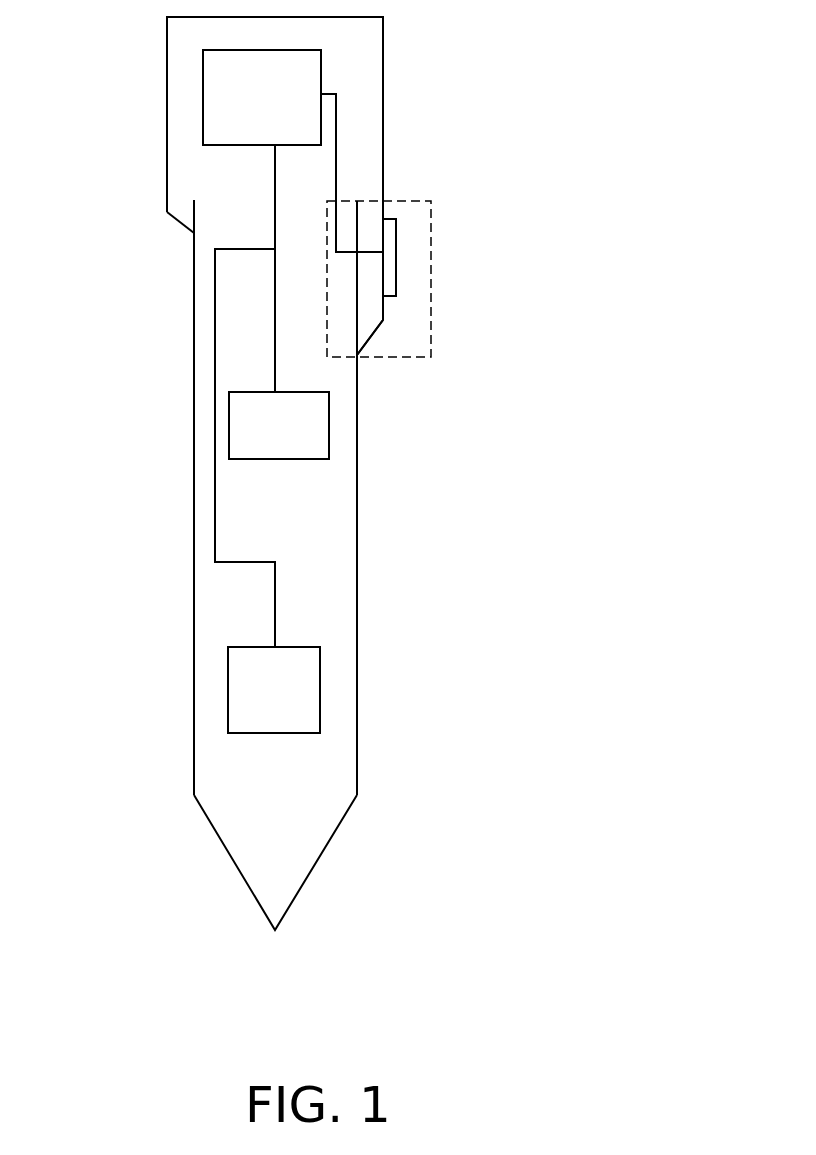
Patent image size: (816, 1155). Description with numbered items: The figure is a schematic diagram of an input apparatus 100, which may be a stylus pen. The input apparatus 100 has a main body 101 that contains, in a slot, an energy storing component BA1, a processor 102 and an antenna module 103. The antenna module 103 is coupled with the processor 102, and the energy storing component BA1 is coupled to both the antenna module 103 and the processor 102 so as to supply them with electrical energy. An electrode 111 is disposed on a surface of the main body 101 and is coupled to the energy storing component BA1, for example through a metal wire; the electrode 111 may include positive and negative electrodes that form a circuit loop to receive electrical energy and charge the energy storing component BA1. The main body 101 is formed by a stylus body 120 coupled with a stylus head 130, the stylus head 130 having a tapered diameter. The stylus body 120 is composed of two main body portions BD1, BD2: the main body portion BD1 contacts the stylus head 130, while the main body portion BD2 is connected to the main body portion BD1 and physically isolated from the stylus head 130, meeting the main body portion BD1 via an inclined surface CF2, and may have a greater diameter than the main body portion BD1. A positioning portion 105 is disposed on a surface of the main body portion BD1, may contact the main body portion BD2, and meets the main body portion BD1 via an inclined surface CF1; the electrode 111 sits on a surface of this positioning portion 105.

The input apparatus 100 is at (326, 474).
The main body 101 is at (330, 565).
The processor 102 is at (329, 432).
The antenna module 103 is at (320, 690).
The positioning portion 105 is at (430, 212).
The electrode 111 is at (396, 253).
The stylus body 120 is at (329, 374).
The stylus head 130 is at (302, 817).
The energy storing component BA1 is at (321, 73).
The main body portion BD1 is at (184, 432).
The main body portion BD2 is at (268, 186).
The inclined surface CF1 is at (369, 340).
The inclined surface CF2 is at (181, 224).